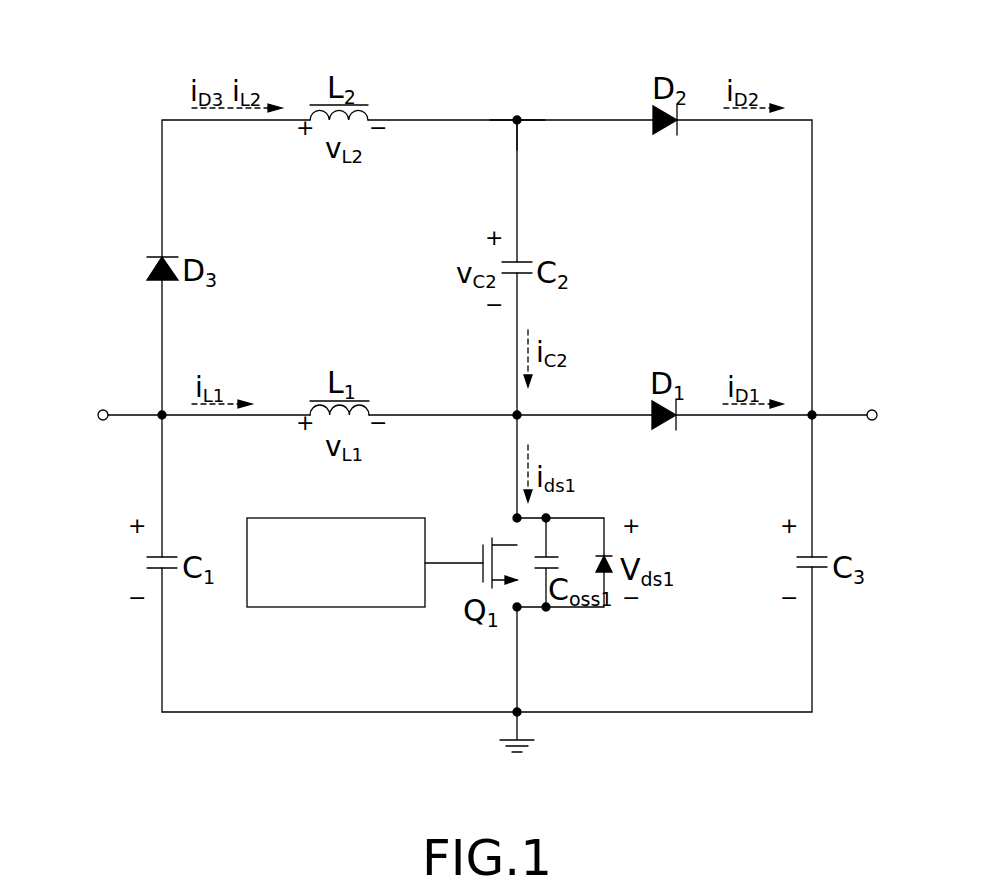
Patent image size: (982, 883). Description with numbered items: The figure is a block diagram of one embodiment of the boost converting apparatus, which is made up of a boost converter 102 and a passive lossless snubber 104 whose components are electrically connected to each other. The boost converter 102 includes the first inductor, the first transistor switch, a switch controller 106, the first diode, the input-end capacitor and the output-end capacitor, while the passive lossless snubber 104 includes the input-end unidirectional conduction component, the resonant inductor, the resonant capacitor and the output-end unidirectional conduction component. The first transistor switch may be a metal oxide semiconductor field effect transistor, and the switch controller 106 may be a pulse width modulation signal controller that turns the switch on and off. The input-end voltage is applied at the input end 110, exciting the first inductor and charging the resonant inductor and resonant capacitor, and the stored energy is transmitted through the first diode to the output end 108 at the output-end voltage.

The boost converter 102 is at (486, 745).
The passive lossless snubber 104 is at (486, 86).
The switch controller 106 is at (337, 522).
The output end 108 is at (876, 409).
The input end 110 is at (103, 409).